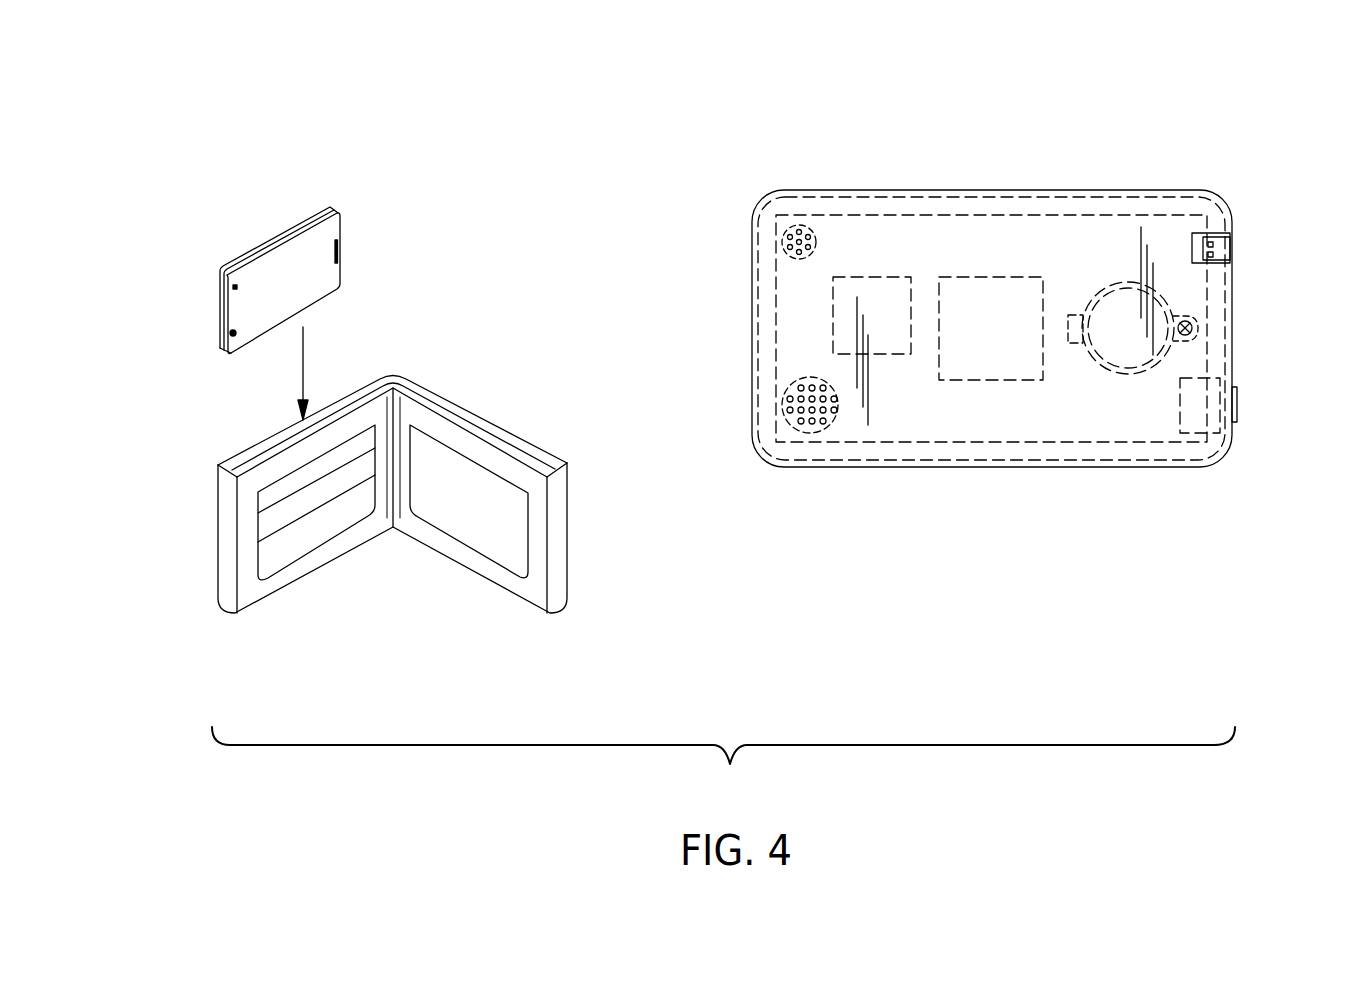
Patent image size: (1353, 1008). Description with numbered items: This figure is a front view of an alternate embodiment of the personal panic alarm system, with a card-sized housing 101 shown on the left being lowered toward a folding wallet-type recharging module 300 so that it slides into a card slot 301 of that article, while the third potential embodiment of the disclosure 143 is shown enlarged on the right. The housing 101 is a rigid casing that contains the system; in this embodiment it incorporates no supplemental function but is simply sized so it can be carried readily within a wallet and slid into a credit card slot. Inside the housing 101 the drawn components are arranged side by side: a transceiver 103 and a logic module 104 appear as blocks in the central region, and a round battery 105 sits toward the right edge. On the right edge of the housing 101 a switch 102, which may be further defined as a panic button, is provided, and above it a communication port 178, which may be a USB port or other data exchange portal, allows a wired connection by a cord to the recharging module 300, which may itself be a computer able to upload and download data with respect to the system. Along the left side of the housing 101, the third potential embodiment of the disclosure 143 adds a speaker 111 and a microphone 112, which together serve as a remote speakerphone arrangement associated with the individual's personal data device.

The housing 101 is at (277, 248).
The recharging module 300 is at (310, 577).
The card pocket 301 is at (268, 533).
The third potential embodiment of the disclosure 143 is at (722, 152).
The microphone 112 is at (783, 242).
The speaker 111 is at (783, 407).
The transceiver 103 is at (875, 288).
The logic module 104 is at (1000, 303).
The battery 105 is at (1115, 307).
The communication port 178 is at (1233, 247).
The switch 102 is at (1238, 400).